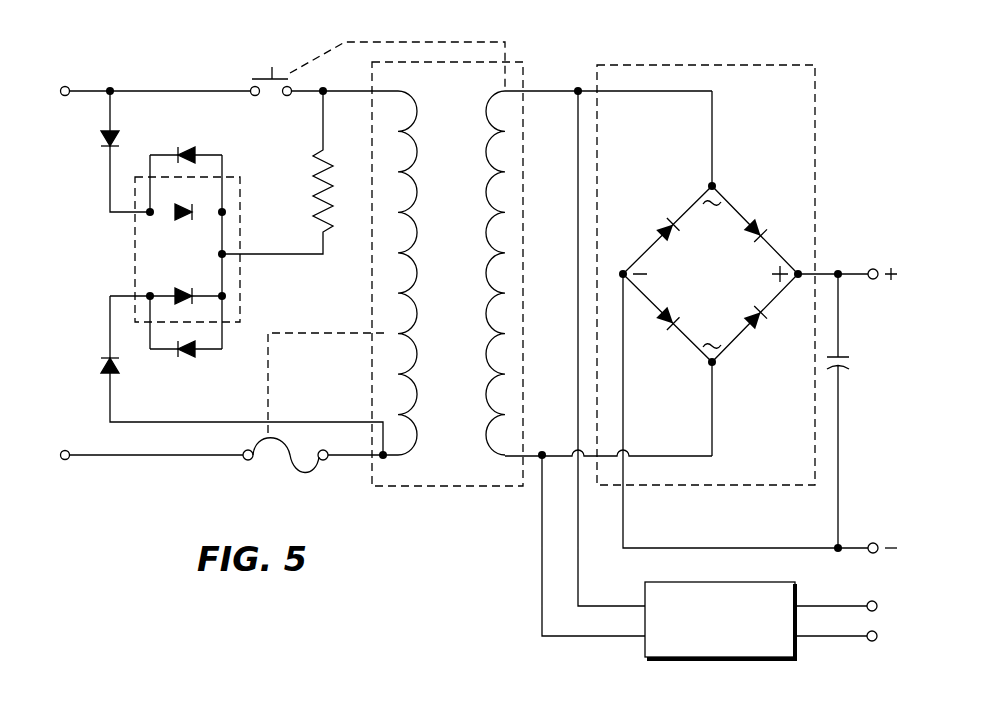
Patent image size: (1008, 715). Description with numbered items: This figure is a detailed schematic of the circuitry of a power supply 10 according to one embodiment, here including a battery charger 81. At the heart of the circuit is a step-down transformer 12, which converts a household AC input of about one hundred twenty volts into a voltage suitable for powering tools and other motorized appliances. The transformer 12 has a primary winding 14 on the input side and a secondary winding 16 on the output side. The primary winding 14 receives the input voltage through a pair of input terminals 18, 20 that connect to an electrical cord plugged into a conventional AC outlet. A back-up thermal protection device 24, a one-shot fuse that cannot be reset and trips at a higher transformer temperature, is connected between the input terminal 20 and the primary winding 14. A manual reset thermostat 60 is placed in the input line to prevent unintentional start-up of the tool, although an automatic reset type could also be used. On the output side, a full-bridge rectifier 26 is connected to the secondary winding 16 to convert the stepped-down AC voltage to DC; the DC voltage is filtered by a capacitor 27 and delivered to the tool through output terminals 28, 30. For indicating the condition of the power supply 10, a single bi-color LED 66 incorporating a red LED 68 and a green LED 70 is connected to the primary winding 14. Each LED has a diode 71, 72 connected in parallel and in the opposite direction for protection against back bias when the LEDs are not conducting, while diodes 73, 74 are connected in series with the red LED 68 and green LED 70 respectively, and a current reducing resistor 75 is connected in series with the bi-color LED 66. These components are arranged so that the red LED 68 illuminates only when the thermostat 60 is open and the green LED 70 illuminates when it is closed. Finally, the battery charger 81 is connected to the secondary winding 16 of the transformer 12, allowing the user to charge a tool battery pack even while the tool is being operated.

The power supply 10 is at (733, 244).
The step-down transformer 12 is at (459, 247).
The primary winding 14 is at (417, 111).
The secondary winding 16 is at (487, 111).
The input terminal 18 is at (68, 86).
The input terminal 20 is at (68, 460).
The back-up thermal protection device 24 is at (290, 466).
The rectifier 26 is at (815, 100).
The capacitor 27 is at (842, 368).
The output terminal 28 is at (870, 268).
The output terminal 30 is at (870, 542).
The manual reset thermostat 60 is at (283, 72).
The bi-color LED 66 is at (182, 244).
The red LED 68 is at (190, 212).
The green LED 70 is at (190, 300).
The diode 71 is at (186, 148).
The diode 72 is at (186, 357).
The diode 73 is at (100, 142).
The diode 74 is at (100, 365).
The current reducing resistor 75 is at (333, 182).
The battery charger 81 is at (787, 660).